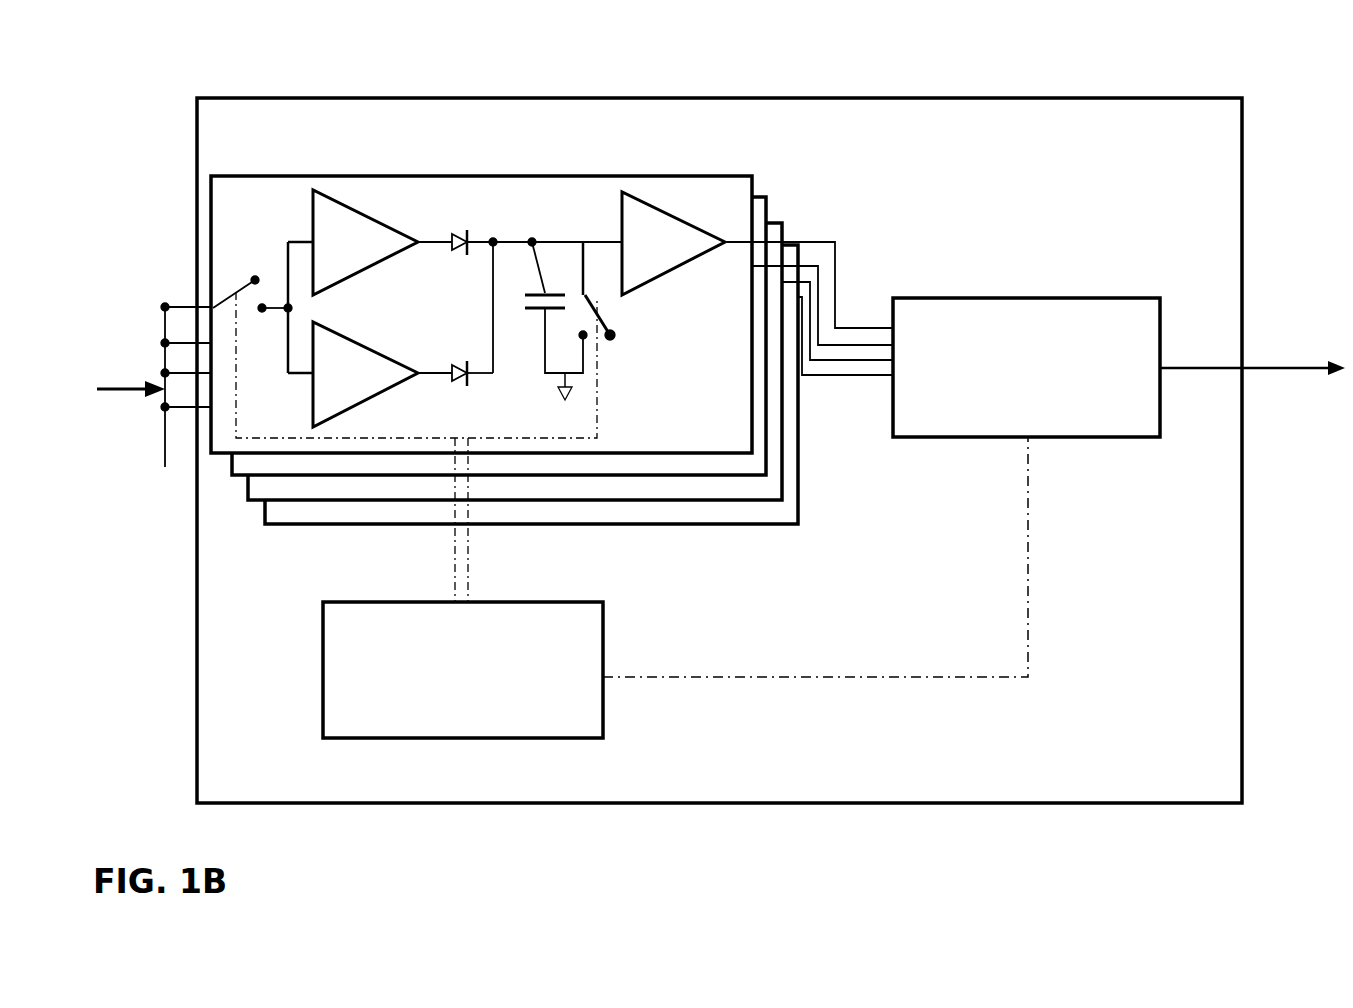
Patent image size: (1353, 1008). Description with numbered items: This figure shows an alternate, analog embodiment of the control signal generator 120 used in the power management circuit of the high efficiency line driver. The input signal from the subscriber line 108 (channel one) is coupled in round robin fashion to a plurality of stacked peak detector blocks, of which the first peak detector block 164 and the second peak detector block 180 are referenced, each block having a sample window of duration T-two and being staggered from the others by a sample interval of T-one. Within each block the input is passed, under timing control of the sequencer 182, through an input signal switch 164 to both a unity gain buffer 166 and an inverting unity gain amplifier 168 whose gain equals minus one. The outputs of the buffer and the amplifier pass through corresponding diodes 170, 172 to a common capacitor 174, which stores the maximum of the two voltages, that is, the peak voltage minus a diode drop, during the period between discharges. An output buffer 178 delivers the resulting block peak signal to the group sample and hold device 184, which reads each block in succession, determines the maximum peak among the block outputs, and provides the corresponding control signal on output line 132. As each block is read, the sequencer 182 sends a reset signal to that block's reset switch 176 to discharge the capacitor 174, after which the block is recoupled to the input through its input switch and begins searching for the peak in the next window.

The subscriber line 108 is at (123, 388).
The control signal generator 120 is at (1106, 98).
The control signal output line 132 is at (1288, 372).
The peak detector block 164 is at (533, 185).
The unity gain buffer 166 is at (320, 240).
The inverting unity gain amplifier 168 is at (344, 350).
The diode 170 is at (463, 235).
The diode 172 is at (466, 390).
The capacitor 174 is at (545, 294).
The reset switch 176 is at (613, 342).
The output buffer 178 is at (630, 240).
The second peak detector block 180 is at (595, 478).
The sequencer 182 is at (590, 637).
The group sample and hold device 184 is at (1065, 316).